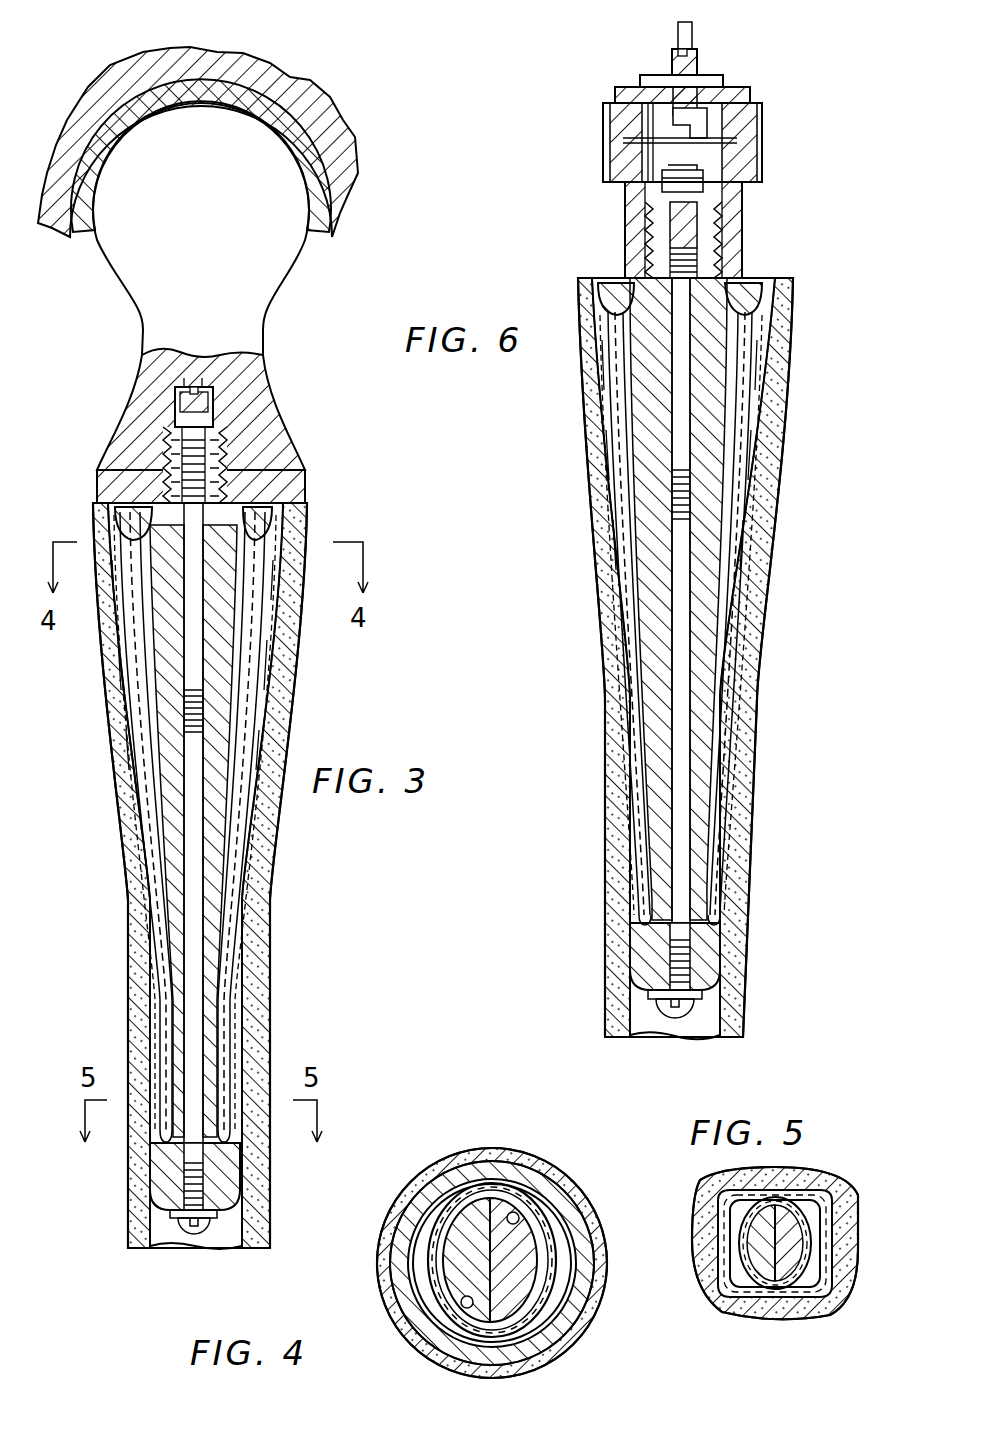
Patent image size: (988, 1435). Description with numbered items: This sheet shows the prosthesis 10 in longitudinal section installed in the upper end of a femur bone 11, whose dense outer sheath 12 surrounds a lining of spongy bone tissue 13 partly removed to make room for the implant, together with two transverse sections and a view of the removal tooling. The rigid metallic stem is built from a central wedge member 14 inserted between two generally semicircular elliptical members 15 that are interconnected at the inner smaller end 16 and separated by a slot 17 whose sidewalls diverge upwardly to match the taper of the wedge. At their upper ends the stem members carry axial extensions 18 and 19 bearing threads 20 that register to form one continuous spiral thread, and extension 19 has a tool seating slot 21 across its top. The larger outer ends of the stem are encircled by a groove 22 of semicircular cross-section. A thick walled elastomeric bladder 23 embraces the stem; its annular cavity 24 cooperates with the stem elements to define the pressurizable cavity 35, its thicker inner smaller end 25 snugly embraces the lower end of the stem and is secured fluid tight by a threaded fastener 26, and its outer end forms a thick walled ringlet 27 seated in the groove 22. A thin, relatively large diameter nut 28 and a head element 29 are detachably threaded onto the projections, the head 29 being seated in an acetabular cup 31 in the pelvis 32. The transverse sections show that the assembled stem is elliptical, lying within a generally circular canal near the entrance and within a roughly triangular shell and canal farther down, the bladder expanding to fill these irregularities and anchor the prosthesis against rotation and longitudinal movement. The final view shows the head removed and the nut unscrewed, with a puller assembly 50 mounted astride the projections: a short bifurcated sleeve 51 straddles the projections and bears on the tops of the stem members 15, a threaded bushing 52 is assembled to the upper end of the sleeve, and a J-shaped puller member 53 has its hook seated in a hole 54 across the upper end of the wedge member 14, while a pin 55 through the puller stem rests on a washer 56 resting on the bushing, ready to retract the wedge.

In FIG. 3, the prosthesis 10 is at (340, 467).
In FIG. 3, the femur bone 11 is at (300, 707).
In FIG. 6, the femur bone 11 is at (807, 383).
In FIG. 4, the femur bone 11 is at (482, 1148).
In FIG. 5, the femur bone 11 is at (785, 1324).
In FIG. 3, the dense outer sheath 12 is at (294, 667).
In FIG. 6, the dense outer sheath 12 is at (788, 425).
In FIG. 4, the dense outer sheath 12 is at (560, 1176).
In FIG. 5, the dense outer sheath 12 is at (742, 1310).
In FIG. 3, the spongy bone tissue 13 is at (110, 530).
In FIG. 6, the spongy bone tissue 13 is at (772, 340).
In FIG. 4, the spongy bone tissue 13 is at (453, 1176).
In FIG. 3, the central wedge member 14 is at (192, 873).
In FIG. 6, the central wedge member 14 is at (684, 615).
In FIG. 4, the central wedge member 14 is at (490, 1268).
In FIG. 5, the central wedge member 14 is at (765, 1262).
In FIG. 3, the semicircular elliptical members 15 is at (205, 932).
In FIG. 6, the semicircular elliptical members 15 is at (648, 660).
In FIG. 4, the semicircular elliptical members 15 is at (521, 1230).
In FIG. 5, the semicircular elliptical members 15 is at (757, 1248).
In FIG. 3, the inner smaller end 16 is at (208, 1156).
In FIG. 6, the inner smaller end 16 is at (665, 931).
In FIG. 3, the slot 17 is at (184, 843).
In FIG. 6, the slot 17 is at (692, 750).
In FIG. 4, the slot 17 is at (480, 1337).
In FIG. 3, the axial extension 18 is at (165, 437).
In FIG. 6, the axial extension 18 is at (650, 250).
In FIG. 3, the axial extension 19 is at (206, 416).
In FIG. 6, the axial extension 19 is at (690, 218).
In FIG. 3, the threads 20 is at (262, 452).
In FIG. 6, the threads 20 is at (718, 258).
In FIG. 3, the tool seating slot 21 is at (176, 389).
In FIG. 6, the tool seating slot 21 is at (681, 46).
In FIG. 3, the groove 22 is at (273, 512).
In FIG. 6, the groove 22 is at (606, 300).
In FIG. 3, the elastomeric bladder 23 is at (132, 800).
In FIG. 6, the elastomeric bladder 23 is at (745, 500).
In FIG. 4, the elastomeric bladder 23 is at (522, 1160).
In FIG. 5, the elastomeric bladder 23 is at (838, 1216).
In FIG. 3, the annular cavity 24 is at (243, 867).
In FIG. 6, the annular cavity 24 is at (733, 537).
In FIG. 3, the inner smaller end 25 is at (156, 1172).
In FIG. 6, the inner smaller end 25 is at (716, 950).
In FIG. 3, the threaded fastener 26 is at (186, 1232).
In FIG. 6, the threaded fastener 26 is at (666, 1010).
In FIG. 3, the ringlet 27 is at (135, 507).
In FIG. 6, the ringlet 27 is at (760, 300).
In FIG. 3, the nut 28 is at (306, 488).
In FIG. 3, the head element 29 is at (266, 270).
In FIG. 3, the acetabular cup 31 is at (318, 187).
In FIG. 3, the pelvis 32 is at (350, 140).
In FIG. 3, the pressurizable cavity 35 is at (237, 578).
In FIG. 6, the pressurizable cavity 35 is at (660, 470).
In FIG. 6, the puller assembly 50 is at (765, 155).
In FIG. 6, the bifurcated sleeve 51 is at (628, 232).
In FIG. 6, the threaded bushing 52 is at (612, 136).
In FIG. 6, the J-shaped puller member 53 is at (700, 130).
In FIG. 6, the hole 54 is at (664, 188).
In FIG. 6, the pin 55 is at (652, 78).
In FIG. 6, the washer 56 is at (616, 93).